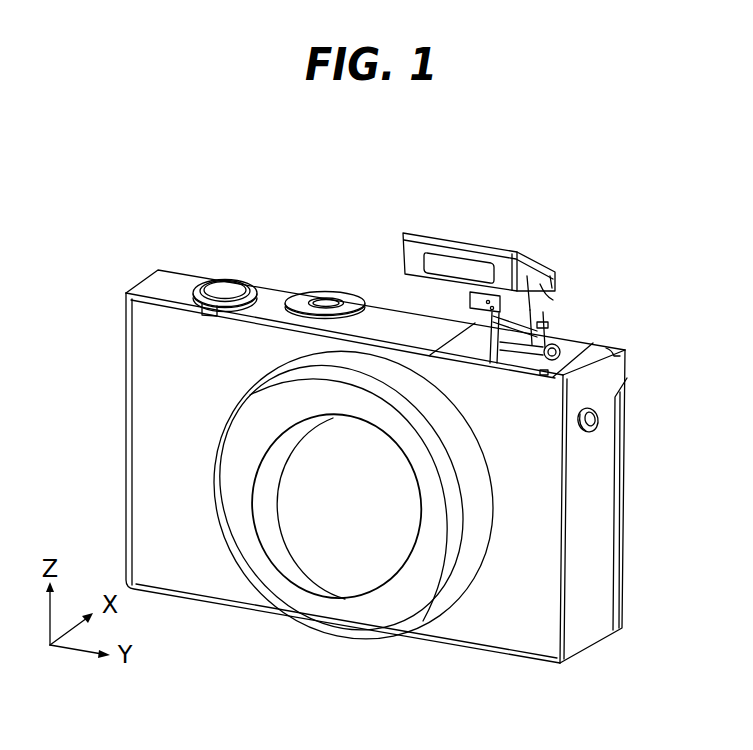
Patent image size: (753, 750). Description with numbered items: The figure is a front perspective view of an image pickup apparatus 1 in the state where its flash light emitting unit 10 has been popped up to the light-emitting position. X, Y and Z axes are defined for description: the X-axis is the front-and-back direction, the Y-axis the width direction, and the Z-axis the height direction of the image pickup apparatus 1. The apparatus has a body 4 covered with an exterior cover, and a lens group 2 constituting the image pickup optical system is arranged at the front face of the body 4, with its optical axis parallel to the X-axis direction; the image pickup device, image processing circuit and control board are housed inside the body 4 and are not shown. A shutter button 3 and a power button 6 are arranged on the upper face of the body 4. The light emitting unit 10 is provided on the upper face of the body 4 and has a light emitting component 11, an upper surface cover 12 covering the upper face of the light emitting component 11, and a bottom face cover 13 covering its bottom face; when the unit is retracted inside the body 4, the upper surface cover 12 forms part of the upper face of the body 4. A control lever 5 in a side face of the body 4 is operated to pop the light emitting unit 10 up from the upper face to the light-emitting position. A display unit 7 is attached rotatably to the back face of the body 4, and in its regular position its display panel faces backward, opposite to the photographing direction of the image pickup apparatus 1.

The image pickup apparatus 1 is at (152, 222).
The lens group 2 is at (358, 503).
The shutter button 3 is at (229, 283).
The body 4 is at (143, 445).
The control lever 5 is at (598, 424).
The power button 6 is at (326, 300).
The display unit 7 is at (620, 506).
The light emitting unit 10 is at (560, 242).
The light emitting component 11 is at (435, 262).
The upper surface cover 12 is at (502, 262).
The bottom face cover 13 is at (538, 302).